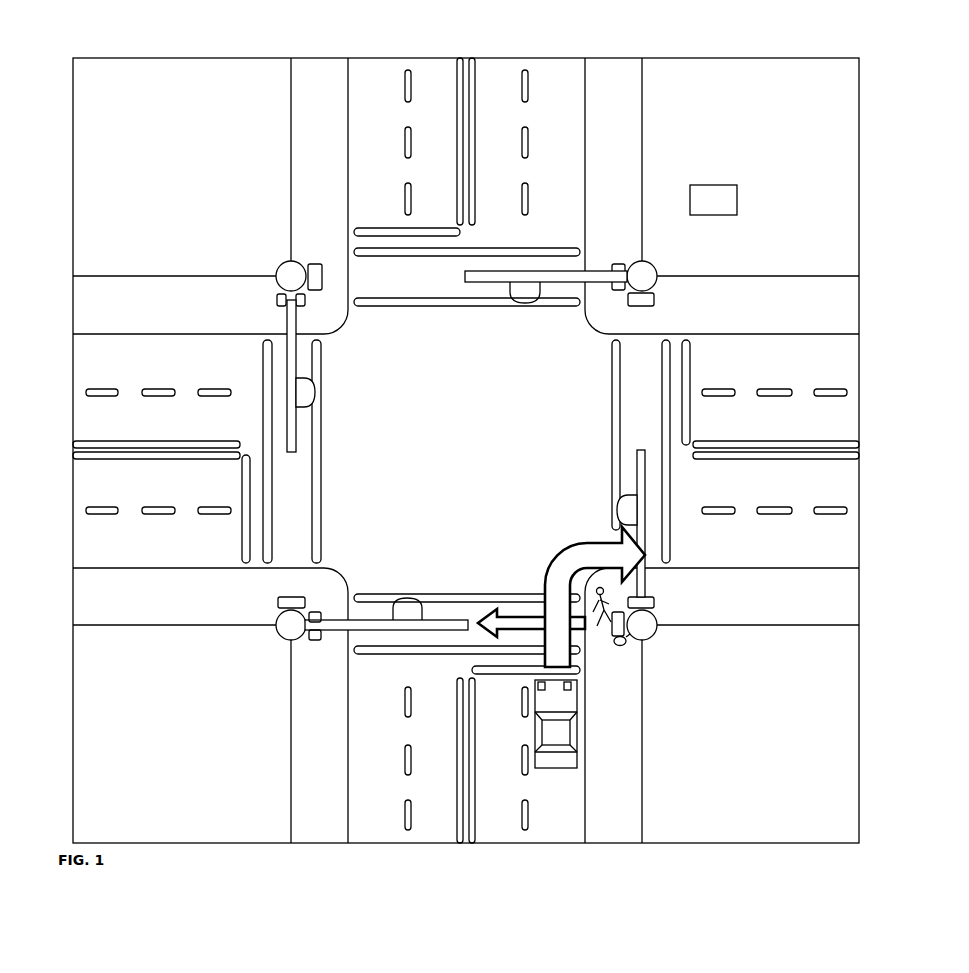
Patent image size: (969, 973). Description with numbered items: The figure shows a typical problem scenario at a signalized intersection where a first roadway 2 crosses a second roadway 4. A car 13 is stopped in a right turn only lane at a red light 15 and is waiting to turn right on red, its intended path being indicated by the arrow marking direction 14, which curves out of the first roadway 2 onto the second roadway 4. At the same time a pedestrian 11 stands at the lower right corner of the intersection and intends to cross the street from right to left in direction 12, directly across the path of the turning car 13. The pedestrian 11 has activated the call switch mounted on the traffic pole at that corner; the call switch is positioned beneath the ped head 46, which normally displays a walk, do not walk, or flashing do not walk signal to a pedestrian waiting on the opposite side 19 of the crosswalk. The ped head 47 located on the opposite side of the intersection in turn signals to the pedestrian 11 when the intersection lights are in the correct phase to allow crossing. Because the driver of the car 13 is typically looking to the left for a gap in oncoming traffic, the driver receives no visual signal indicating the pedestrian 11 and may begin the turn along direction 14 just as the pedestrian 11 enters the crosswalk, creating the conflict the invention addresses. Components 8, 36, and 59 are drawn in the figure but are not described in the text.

The first roadway 2 is at (549, 114).
The second roadway 4 is at (126, 358).
The remote server 8 is at (724, 185).
The pedestrian 11 is at (610, 655).
The direction 12 is at (504, 661).
The car 13 is at (551, 768).
The direction 14 is at (592, 538).
The red light 15 is at (536, 338).
The opposite side 19 is at (323, 586).
The signal mast arm 36 is at (412, 640).
The ped head 46 is at (645, 640).
The ped head 47 is at (316, 642).
The traffic signal 59 is at (657, 618).